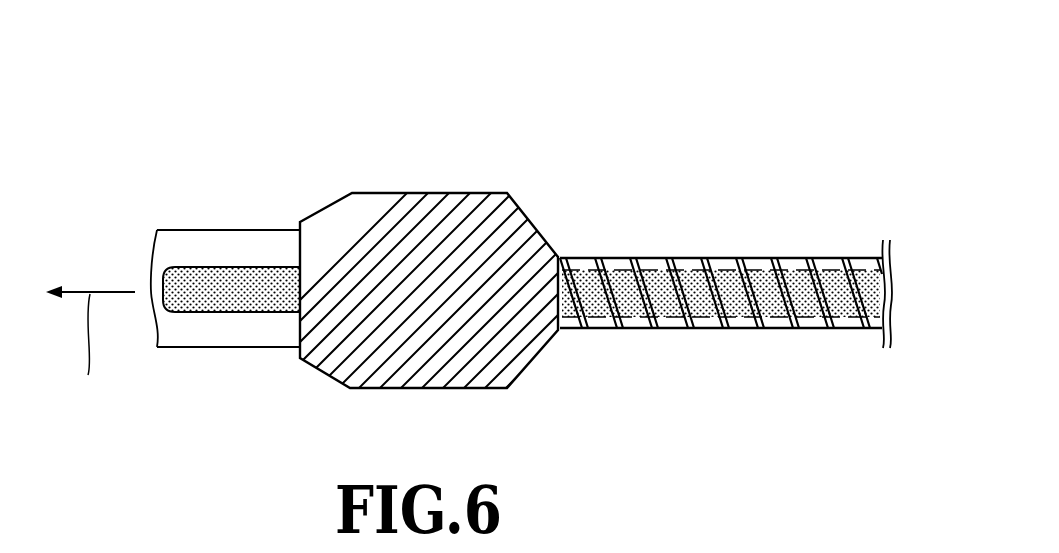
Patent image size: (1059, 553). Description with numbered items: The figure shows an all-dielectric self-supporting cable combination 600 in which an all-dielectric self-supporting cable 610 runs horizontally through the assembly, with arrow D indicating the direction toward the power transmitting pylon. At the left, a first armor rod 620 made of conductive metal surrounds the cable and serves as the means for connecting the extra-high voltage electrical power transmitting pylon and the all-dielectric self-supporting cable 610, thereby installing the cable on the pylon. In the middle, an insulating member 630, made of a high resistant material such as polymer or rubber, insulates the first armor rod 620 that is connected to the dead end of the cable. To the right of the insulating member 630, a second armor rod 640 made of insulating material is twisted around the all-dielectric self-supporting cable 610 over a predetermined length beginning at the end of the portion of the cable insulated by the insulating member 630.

The all-dielectric self-supporting cable combination 600 is at (600, 133).
The all-dielectric self-supporting cable 610 is at (265, 305).
The first armor rod 620 is at (193, 230).
The insulating member 630 is at (408, 207).
The second armor rod 640 is at (677, 329).